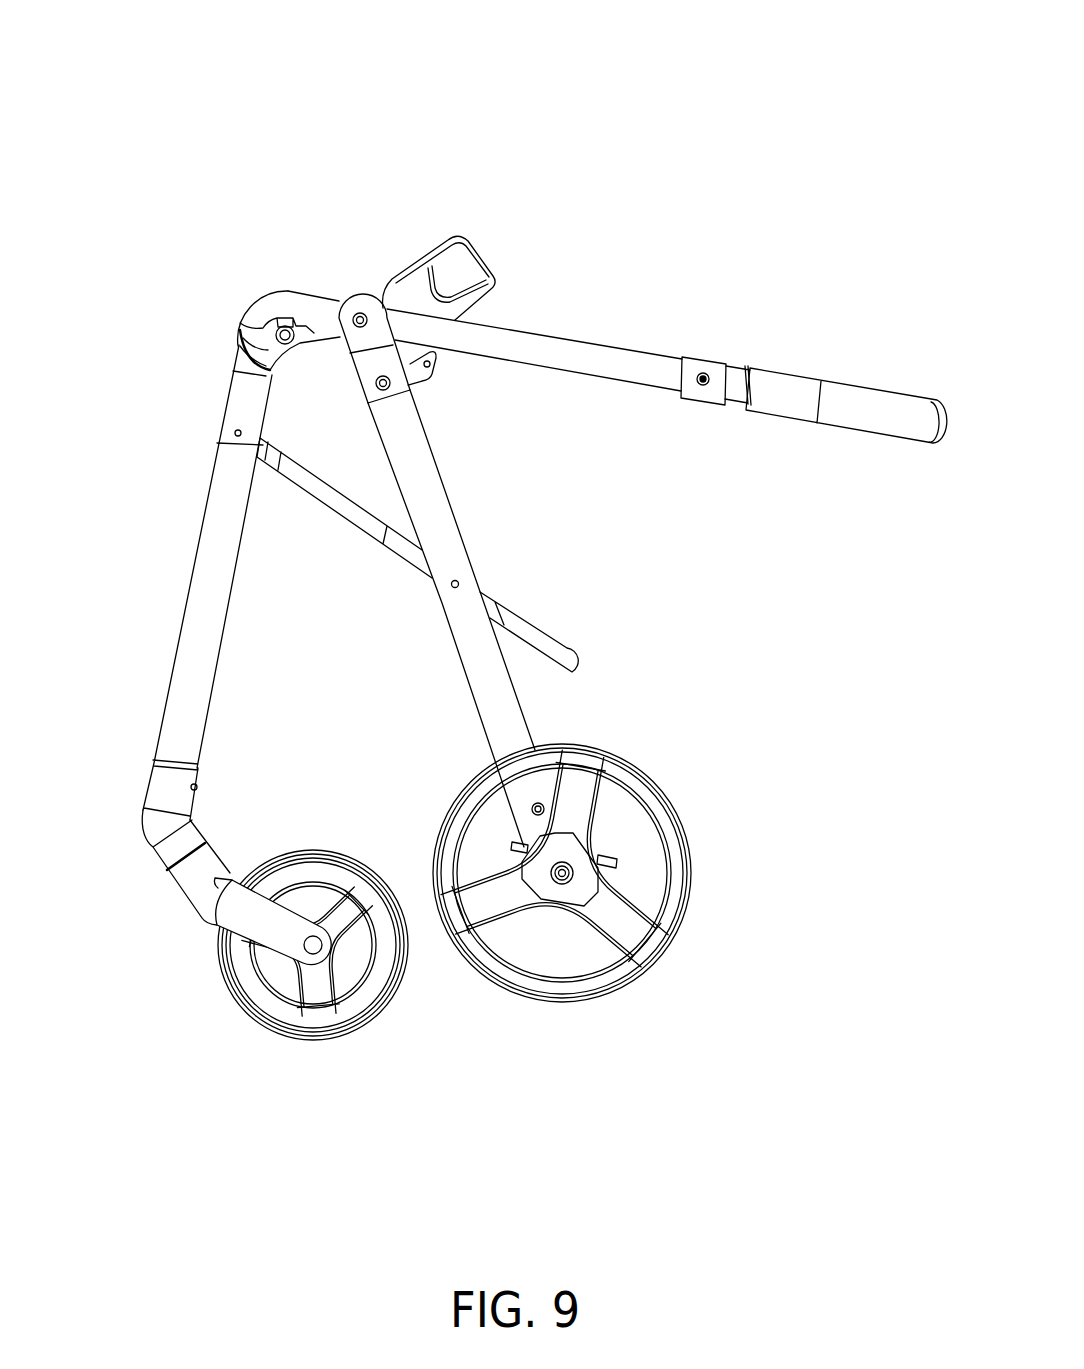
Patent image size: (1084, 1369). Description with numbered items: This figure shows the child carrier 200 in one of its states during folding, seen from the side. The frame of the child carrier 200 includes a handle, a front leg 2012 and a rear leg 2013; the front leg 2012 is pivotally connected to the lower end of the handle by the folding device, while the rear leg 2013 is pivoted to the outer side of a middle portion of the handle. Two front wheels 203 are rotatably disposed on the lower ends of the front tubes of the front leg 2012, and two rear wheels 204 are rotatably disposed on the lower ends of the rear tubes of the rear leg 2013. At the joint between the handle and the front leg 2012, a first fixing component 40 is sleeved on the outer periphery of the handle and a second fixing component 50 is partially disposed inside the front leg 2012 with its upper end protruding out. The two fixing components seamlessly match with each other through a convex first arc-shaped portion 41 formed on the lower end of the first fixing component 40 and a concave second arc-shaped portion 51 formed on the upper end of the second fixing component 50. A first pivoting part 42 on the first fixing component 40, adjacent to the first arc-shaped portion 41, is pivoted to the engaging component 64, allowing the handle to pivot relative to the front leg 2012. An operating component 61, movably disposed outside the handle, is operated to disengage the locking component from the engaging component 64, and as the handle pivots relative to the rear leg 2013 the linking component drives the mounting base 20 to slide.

The child carrier 200 is at (222, 41).
The mounting base 20 is at (422, 252).
The first fixing component 40 is at (297, 302).
The first arc-shaped portion 41 is at (247, 317).
The first pivoting part 42 is at (270, 322).
The second fixing component 50 is at (242, 373).
The second arc-shaped portion 51 is at (238, 338).
The operating component 61 is at (710, 362).
The engaging component 64 is at (257, 335).
The front leg 2012 is at (594, 358).
The rear leg 2013 is at (508, 712).
The front wheels 203 is at (313, 1040).
The rear wheels 204 is at (645, 978).